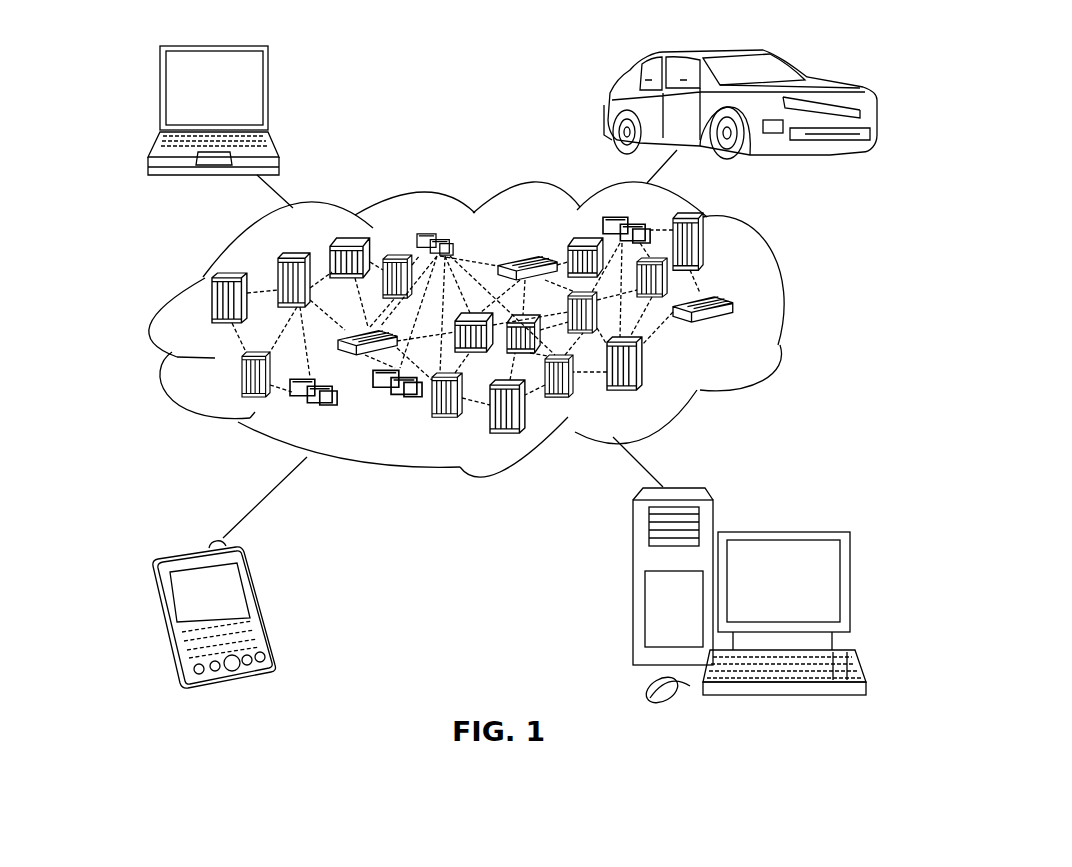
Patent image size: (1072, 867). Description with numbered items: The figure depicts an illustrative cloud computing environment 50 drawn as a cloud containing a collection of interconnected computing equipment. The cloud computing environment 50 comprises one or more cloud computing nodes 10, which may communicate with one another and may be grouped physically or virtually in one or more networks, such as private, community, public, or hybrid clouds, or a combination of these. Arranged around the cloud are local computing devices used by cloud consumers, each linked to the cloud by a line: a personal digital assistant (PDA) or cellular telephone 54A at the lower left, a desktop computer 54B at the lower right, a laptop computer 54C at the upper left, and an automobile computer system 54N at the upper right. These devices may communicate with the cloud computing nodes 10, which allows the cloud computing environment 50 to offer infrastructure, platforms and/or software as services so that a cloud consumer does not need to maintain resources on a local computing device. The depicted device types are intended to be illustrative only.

The cloud computing node 10 is at (735, 328).
The cloud computing environment 50 is at (777, 298).
The personal digital assistant (PDA) or cellular telephone 54A is at (257, 604).
The desktop computer 54B is at (782, 532).
The laptop computer 54C is at (268, 88).
The automobile computer system 54N is at (610, 104).